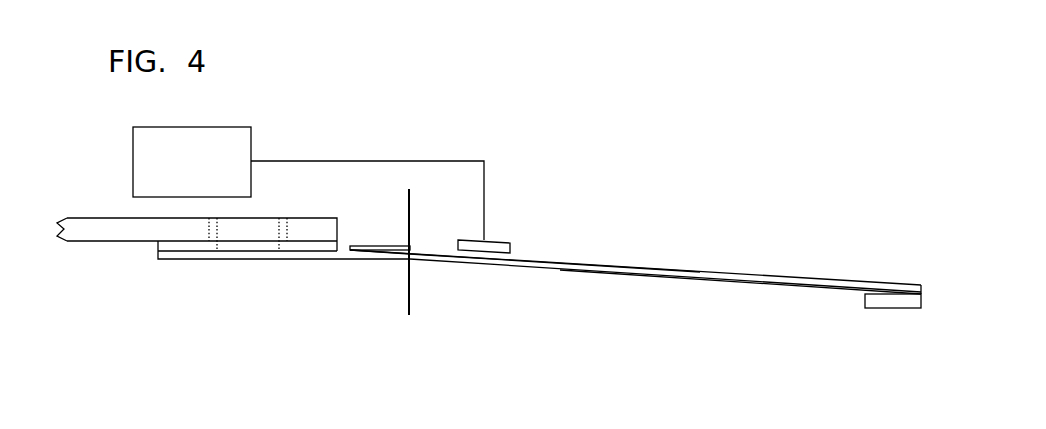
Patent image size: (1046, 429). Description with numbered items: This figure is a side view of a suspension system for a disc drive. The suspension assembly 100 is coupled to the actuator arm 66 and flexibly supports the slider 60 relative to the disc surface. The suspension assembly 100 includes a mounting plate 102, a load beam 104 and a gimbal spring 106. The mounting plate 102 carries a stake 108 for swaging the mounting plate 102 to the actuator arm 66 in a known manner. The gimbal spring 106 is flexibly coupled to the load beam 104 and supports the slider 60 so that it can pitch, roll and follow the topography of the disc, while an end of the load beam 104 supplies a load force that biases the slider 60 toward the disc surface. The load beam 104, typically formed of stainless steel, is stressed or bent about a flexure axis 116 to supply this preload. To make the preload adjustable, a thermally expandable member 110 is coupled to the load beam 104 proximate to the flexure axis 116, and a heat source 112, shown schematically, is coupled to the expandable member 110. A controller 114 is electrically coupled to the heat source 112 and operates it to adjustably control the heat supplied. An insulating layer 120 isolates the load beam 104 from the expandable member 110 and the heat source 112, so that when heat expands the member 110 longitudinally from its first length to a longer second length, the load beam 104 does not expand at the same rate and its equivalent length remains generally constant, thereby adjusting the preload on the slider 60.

The slider 60 is at (892, 318).
The actuator arm 66 is at (106, 200).
The suspension assembly 100 is at (635, 254).
The mounting plate 102 is at (157, 248).
The load beam 104 is at (678, 273).
The gimbal spring 106 is at (772, 285).
The stake 108 is at (283, 232).
The thermally expandable member 110 is at (368, 234).
The heat source 112 is at (499, 231).
The controller 114 is at (180, 118).
The flexure axis 116 is at (410, 283).
The insulating layer 120 is at (373, 252).